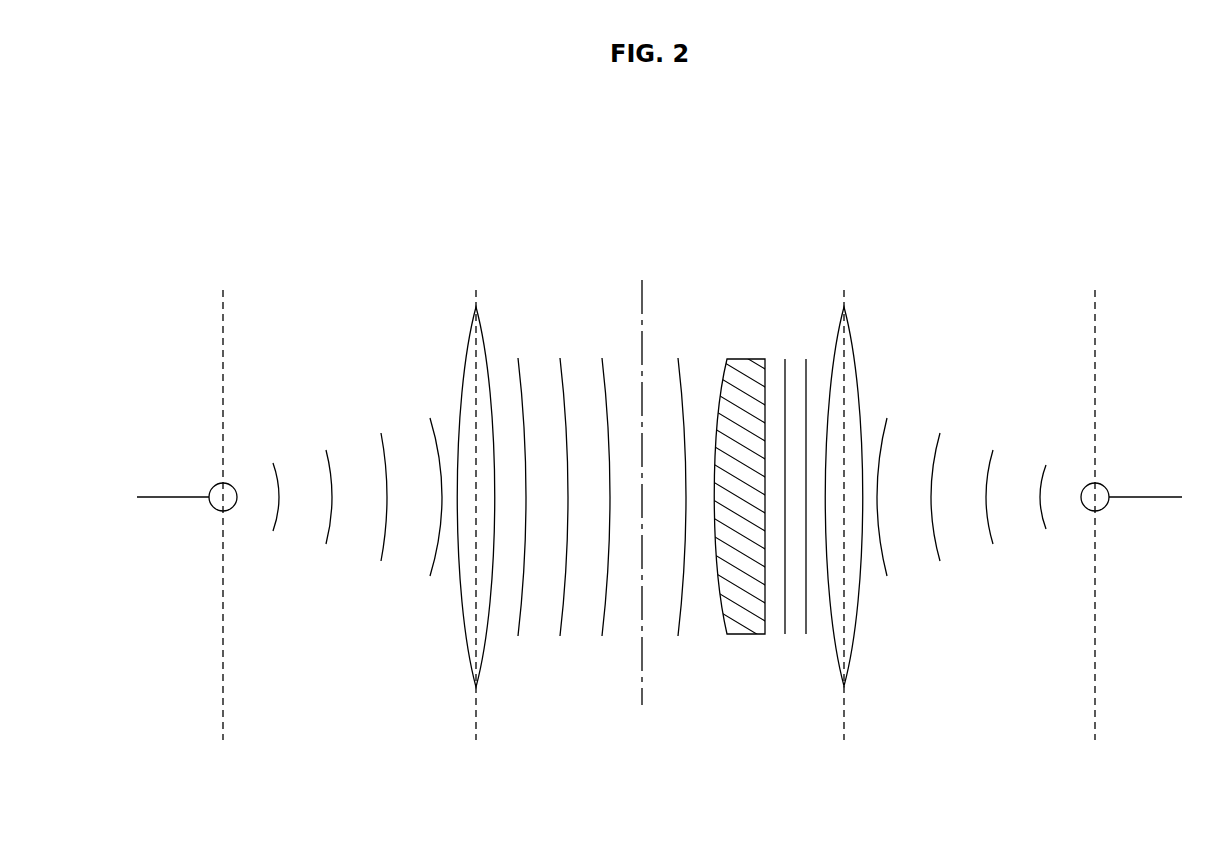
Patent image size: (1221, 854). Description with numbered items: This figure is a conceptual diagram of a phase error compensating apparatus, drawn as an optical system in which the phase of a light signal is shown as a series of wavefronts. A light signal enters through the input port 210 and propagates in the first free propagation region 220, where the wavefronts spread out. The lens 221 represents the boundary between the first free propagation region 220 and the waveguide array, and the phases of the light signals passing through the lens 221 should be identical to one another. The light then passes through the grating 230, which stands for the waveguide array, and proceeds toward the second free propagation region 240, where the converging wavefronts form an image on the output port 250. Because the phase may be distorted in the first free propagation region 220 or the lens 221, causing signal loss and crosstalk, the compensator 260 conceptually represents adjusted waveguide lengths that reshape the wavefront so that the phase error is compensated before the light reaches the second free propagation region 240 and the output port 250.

The input port 210 is at (170, 498).
The first free propagation region 220 is at (205, 688).
The lens 221 is at (476, 688).
The grating 230 is at (642, 278).
The second free propagation region 240 is at (1092, 688).
The output port 250 is at (1146, 497).
The compensator 260 is at (745, 358).